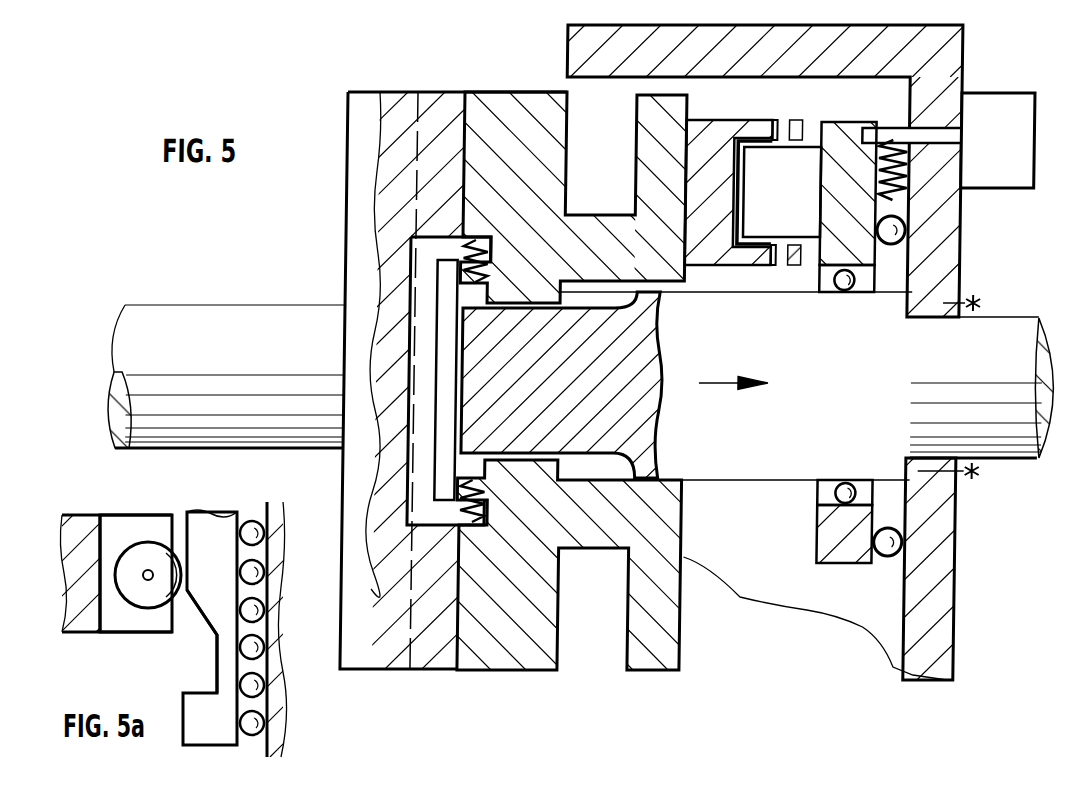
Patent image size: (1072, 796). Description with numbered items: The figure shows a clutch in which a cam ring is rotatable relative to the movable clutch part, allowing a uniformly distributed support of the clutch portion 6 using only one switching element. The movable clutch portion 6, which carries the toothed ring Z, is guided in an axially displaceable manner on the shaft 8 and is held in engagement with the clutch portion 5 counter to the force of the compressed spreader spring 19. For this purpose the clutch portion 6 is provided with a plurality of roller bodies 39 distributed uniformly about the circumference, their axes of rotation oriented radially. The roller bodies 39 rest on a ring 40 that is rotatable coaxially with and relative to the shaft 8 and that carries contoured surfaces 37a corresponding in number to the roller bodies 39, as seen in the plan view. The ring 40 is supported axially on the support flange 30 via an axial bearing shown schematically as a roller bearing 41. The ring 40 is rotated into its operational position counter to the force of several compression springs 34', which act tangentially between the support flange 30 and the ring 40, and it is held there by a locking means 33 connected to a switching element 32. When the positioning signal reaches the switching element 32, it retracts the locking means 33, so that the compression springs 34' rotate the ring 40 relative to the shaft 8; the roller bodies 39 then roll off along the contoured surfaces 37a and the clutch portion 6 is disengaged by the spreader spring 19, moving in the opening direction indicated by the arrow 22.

In FIG. 5, the clutch portion 5 is at (350, 208).
In FIG. 5, the movable clutch portion 6 is at (493, 102).
In FIG. 5, the shaft 8 is at (1044, 436).
In FIG. 5, the spreader spring 19 is at (462, 256).
In FIG. 5, the arrow 22 is at (722, 386).
In FIG. 5, the support flange 30 is at (945, 548).
In FIG. 5a, the support flange 30 is at (275, 735).
In FIG. 5, the switching element 32 is at (1010, 104).
In FIG. 5, the locking means 33 is at (940, 137).
In FIG. 5, the compression springs 34' is at (975, 165).
In FIG. 5a, the contoured surfaces 37a is at (193, 613).
In FIG. 5, the roller bodies 39 is at (752, 165).
In FIG. 5a, the roller bodies 39 is at (130, 593).
In FIG. 5, the ring 40 is at (860, 250).
In FIG. 5a, the ring 40 is at (200, 522).
In FIG. 5, the roller bearing 41 is at (908, 230).
In FIG. 5a, the roller bearing 41 is at (270, 712).
In FIG. 5, the toothed ring Z is at (440, 92).